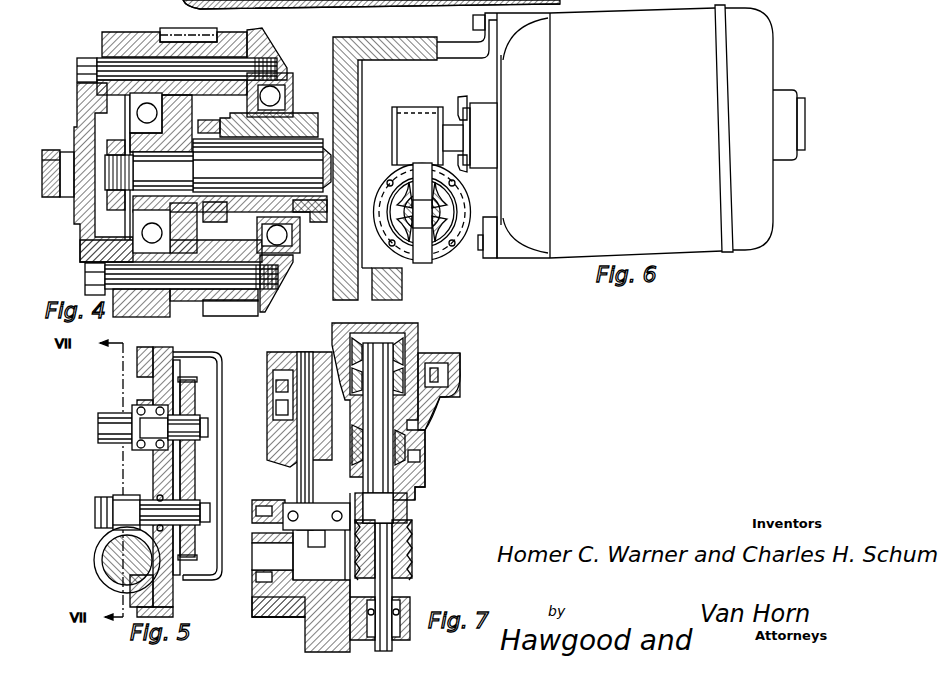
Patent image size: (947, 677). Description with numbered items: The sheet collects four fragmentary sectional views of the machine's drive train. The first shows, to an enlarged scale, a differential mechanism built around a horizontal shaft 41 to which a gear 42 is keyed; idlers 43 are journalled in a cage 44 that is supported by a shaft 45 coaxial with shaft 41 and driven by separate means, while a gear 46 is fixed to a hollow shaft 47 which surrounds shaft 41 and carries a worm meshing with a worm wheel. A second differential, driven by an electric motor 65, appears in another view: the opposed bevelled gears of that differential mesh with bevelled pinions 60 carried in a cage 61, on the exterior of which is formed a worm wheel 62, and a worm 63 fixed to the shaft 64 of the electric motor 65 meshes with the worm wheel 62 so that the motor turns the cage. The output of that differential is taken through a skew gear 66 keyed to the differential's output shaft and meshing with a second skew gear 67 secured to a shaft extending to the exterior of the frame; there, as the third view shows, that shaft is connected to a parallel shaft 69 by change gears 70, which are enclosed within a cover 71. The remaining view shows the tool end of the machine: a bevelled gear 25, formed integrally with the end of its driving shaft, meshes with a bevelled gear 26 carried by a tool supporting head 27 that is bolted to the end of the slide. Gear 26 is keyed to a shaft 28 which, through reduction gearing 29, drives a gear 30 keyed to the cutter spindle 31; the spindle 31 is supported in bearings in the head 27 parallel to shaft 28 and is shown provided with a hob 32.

In FIG. 4, the horizontal shaft 41 is at (262, 165).
In FIG. 4, the gear 42 is at (163, 205).
In FIG. 4, the idlers 43 is at (217, 32).
In FIG. 4, the cage 44 is at (87, 243).
In FIG. 4, the shaft 45 is at (55, 198).
In FIG. 4, the gear 46 is at (235, 205).
In FIG. 4, the hollow shaft 47 is at (308, 214).
In FIG. 6, the bevelled pinions 60 is at (445, 200).
In FIG. 6, the cage 61 is at (455, 248).
In FIG. 6, the worm wheel 62 is at (430, 218).
In FIG. 6, the worm 63 is at (407, 113).
In FIG. 6, the shaft 64 is at (450, 125).
In FIG. 6, the electric motor 65 is at (651, 131).
In FIG. 5, the skew gear 66 is at (105, 559).
In FIG. 5, the second skew gear 67 is at (120, 495).
In FIG. 5, the parallel shaft 69 is at (138, 427).
In FIG. 5, the change gears 70 is at (195, 482).
In FIG. 5, the cover 71 is at (208, 354).
In FIG. 7, the bevelled gear 25 is at (297, 570).
In FIG. 7, the bevelled gear 26 is at (282, 505).
In FIG. 7, the tool supporting head 27 is at (316, 631).
In FIG. 7, the shaft 28 is at (297, 476).
In FIG. 7, the reduction gearing 29 is at (273, 410).
In FIG. 7, the gear 30 is at (455, 382).
In FIG. 7, the cutter spindle 31 is at (396, 528).
In FIG. 7, the hob 32 is at (410, 556).